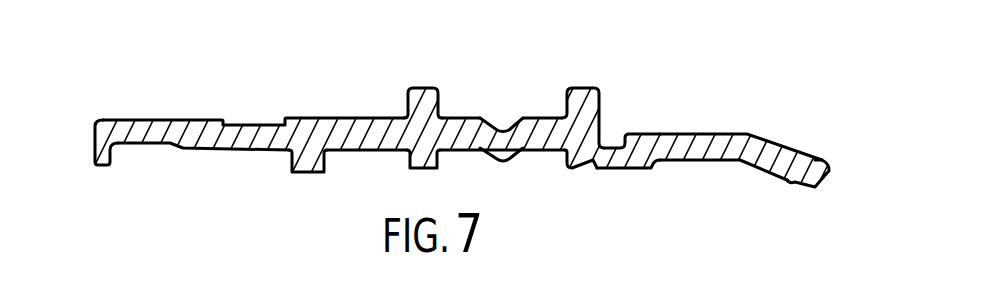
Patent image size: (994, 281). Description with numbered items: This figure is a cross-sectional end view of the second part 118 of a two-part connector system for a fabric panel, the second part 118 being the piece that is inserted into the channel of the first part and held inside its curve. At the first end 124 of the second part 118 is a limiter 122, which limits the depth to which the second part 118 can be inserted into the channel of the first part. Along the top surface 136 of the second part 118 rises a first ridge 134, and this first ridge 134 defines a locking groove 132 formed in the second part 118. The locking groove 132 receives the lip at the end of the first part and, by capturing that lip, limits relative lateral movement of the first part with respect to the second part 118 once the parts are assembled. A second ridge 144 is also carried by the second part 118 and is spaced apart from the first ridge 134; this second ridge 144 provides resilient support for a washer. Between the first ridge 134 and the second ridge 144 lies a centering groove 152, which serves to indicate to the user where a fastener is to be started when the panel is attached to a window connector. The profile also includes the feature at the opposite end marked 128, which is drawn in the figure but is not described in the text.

The second part 118 is at (435, 130).
The first end hook 128 is at (80, 130).
The top surface 136 is at (313, 115).
The second ridge 144 is at (421, 87).
The centering groove 152 is at (506, 128).
The first ridge 134 is at (586, 87).
The locking groove 132 is at (613, 145).
The first end 124 is at (825, 158).
The limiter 122 is at (798, 171).